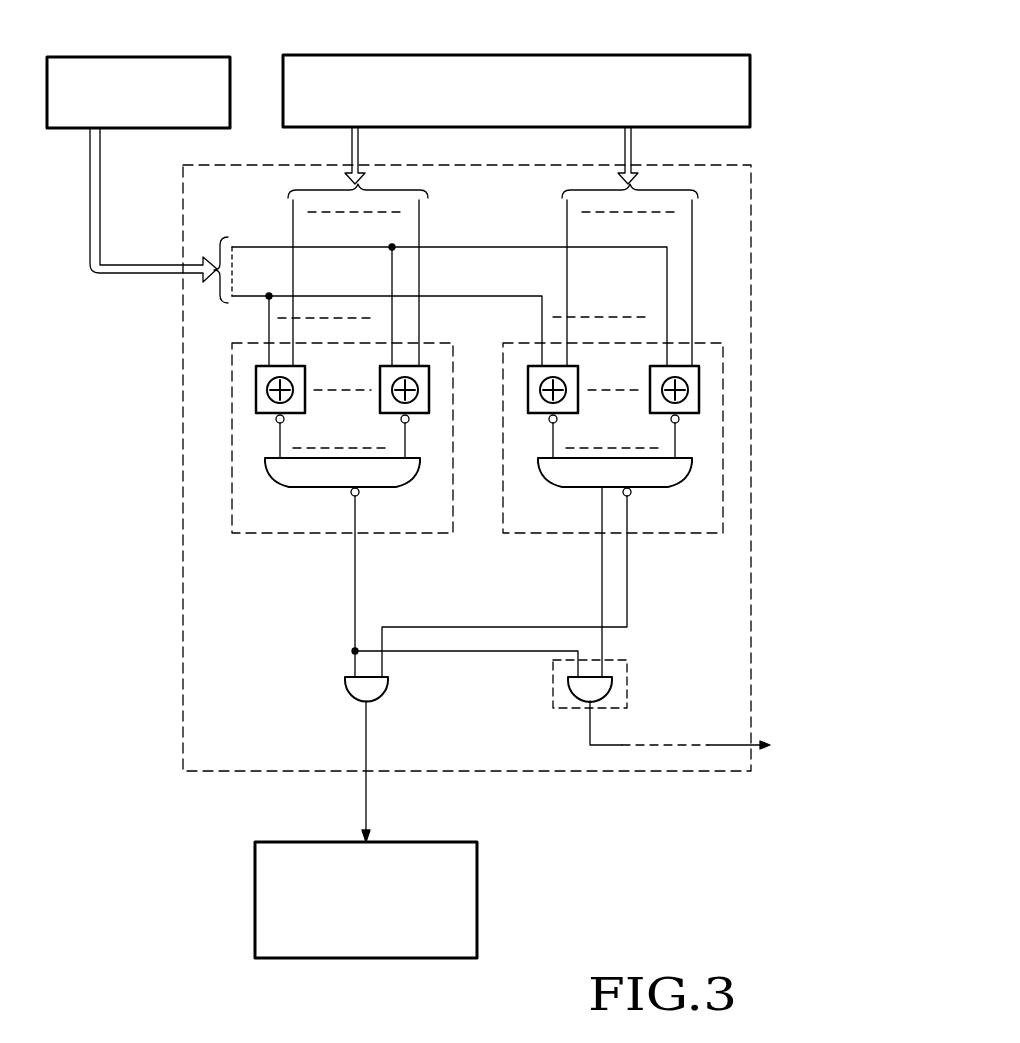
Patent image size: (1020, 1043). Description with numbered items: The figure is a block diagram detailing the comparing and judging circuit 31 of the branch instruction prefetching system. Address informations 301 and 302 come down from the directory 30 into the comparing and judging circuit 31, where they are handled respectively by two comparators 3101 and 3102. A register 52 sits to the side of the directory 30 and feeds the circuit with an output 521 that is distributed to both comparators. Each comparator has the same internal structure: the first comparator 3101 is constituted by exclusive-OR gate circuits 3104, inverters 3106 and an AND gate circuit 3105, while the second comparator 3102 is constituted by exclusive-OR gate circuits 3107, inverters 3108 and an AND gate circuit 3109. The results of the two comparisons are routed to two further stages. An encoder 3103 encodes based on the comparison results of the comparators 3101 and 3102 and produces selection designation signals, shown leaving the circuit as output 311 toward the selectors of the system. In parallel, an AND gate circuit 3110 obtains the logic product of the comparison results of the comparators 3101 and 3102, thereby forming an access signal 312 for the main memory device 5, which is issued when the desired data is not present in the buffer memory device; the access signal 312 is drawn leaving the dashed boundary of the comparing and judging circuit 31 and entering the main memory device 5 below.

The register 52 is at (134, 57).
The directory 30 is at (500, 55).
The address information 301 is at (362, 149).
The address information 302 is at (636, 149).
The register output 521 is at (138, 265).
The comparing and judging circuit 31 is at (248, 772).
The comparator 3101 is at (279, 538).
The comparator 3102 is at (519, 538).
The exclusive-OR gate circuit 3104 is at (308, 372).
The inverter 3106 is at (285, 422).
The AND gate circuit 3105 is at (310, 489).
The exclusive-OR gate circuit 3107 is at (580, 372).
The inverter 3108 is at (558, 422).
The AND gate circuit 3109 is at (572, 489).
The AND gate circuit 3110 is at (345, 700).
The encoder 3103 is at (553, 698).
The output to selectors 311 is at (740, 797).
The access signal 312 is at (366, 803).
The main memory device 5 is at (480, 905).